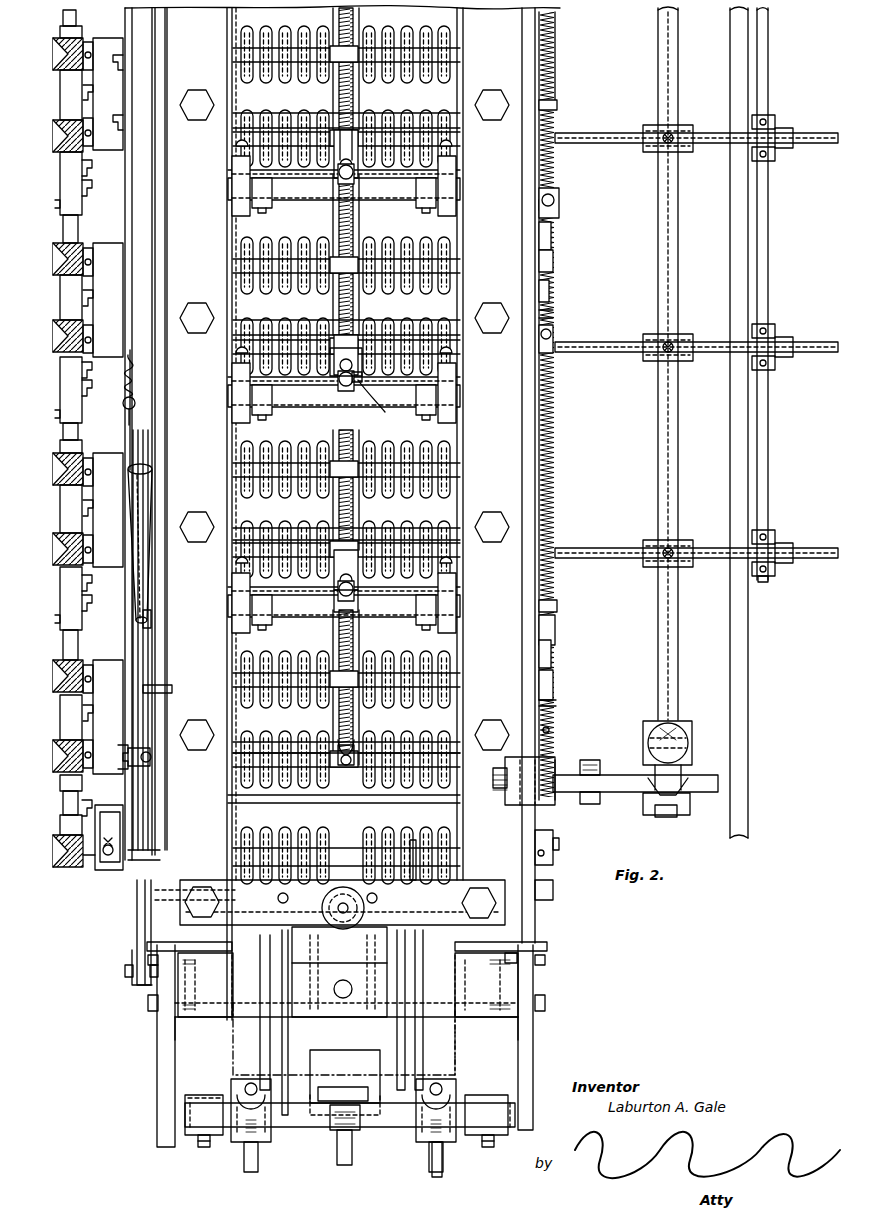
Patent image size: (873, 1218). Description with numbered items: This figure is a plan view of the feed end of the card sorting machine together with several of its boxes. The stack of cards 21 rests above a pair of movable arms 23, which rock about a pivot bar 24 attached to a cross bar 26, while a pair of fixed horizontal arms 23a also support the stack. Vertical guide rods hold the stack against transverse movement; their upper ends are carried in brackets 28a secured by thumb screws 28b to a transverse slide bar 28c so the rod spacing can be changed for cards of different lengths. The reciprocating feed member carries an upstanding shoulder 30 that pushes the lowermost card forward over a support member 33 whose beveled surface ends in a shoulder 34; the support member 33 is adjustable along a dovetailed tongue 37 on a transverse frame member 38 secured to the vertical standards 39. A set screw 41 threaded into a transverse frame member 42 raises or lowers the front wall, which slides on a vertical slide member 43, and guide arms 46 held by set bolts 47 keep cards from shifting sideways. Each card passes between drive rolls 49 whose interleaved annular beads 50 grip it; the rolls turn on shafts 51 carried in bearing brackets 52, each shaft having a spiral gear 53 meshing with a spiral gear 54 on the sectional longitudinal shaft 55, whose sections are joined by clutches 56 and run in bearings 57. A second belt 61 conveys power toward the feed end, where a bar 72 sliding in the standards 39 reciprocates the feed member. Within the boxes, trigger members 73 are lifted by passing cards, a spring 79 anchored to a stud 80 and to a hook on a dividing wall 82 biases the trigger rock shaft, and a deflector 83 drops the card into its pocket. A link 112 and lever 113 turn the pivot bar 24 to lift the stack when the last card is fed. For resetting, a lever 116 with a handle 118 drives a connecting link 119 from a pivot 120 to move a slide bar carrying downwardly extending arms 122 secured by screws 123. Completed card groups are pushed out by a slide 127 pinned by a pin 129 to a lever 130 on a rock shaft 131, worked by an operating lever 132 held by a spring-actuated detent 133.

The stack of cards 21 is at (460, 1040).
The movable arms 23 is at (290, 1040).
The horizontal arms 23a is at (215, 1038).
The pivot bar 24 is at (150, 902).
The cross bar 26 is at (340, 901).
The brackets 28a is at (452, 1148).
The thumb screws 28b is at (438, 1170).
The transverse slide bar 28c is at (383, 1128).
The upstanding shoulder 30 is at (348, 1088).
The support member 33 is at (390, 1008).
The shoulder 34 is at (372, 930).
The dovetailed tongue 37 is at (295, 1026).
The transverse frame member 38 is at (205, 1065).
The vertical standards 39 is at (162, 1088).
The set screw 41 is at (354, 905).
The transverse frame member 42 is at (474, 887).
The vertical slide member 43 is at (327, 895).
The guide arms 46 is at (463, 950).
The set bolts 47 is at (520, 957).
The drive rolls 49 is at (392, 845).
The annular beads 50 is at (413, 838).
The shafts 51 is at (345, 850).
The bearing brackets 52 is at (103, 300).
The spiral gear 53 is at (60, 870).
The spiral gear 54 is at (72, 862).
The longitudinal shaft 55 is at (78, 793).
The clutches 56 is at (78, 585).
The bearings 57 is at (78, 405).
The second belt 61 is at (346, 362).
The bar 72 is at (340, 1160).
The trigger members 73 is at (357, 520).
The spring 79 is at (352, 627).
The stud 80 is at (355, 746).
The dividing wall 82 is at (400, 385).
The deflector 83 is at (376, 400).
The link 112 is at (135, 928).
The lever 113 is at (148, 944).
The lever 116 is at (142, 673).
The handle 118 is at (148, 490).
The connecting link 119 is at (133, 651).
The pivot 120 is at (120, 748).
The downwardly extending arms 122 is at (128, 24).
The screws 123 is at (118, 115).
The slide 127 is at (628, 142).
The pin 129 is at (768, 465).
The lever 130 is at (838, 140).
The rock shaft 131 is at (668, 646).
The operating lever 132 is at (678, 732).
The spring-actuated detent 133 is at (674, 806).